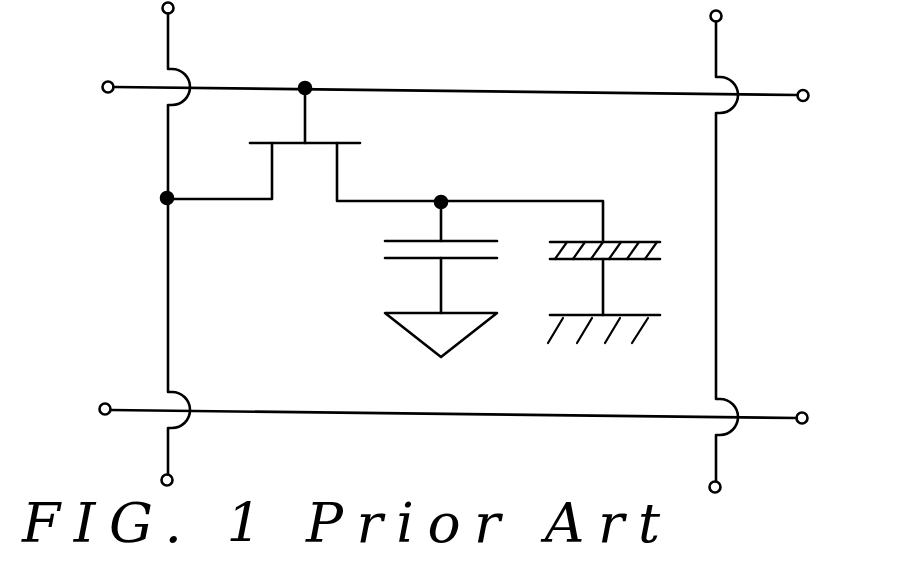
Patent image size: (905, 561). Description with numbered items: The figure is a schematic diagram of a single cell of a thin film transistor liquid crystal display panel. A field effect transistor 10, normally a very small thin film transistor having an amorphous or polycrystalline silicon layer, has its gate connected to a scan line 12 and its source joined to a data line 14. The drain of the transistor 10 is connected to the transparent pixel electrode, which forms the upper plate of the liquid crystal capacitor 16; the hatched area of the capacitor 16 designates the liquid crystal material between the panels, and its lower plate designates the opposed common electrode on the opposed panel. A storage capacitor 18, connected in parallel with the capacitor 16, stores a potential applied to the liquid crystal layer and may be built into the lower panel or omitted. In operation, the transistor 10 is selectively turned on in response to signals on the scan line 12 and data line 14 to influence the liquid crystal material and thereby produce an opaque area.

The field effect transistor 10 is at (353, 143).
The scan line 12 is at (760, 96).
The data line 14 is at (167, 262).
The liquid crystal capacitor 16 is at (648, 258).
The storage capacitor 18 is at (400, 255).